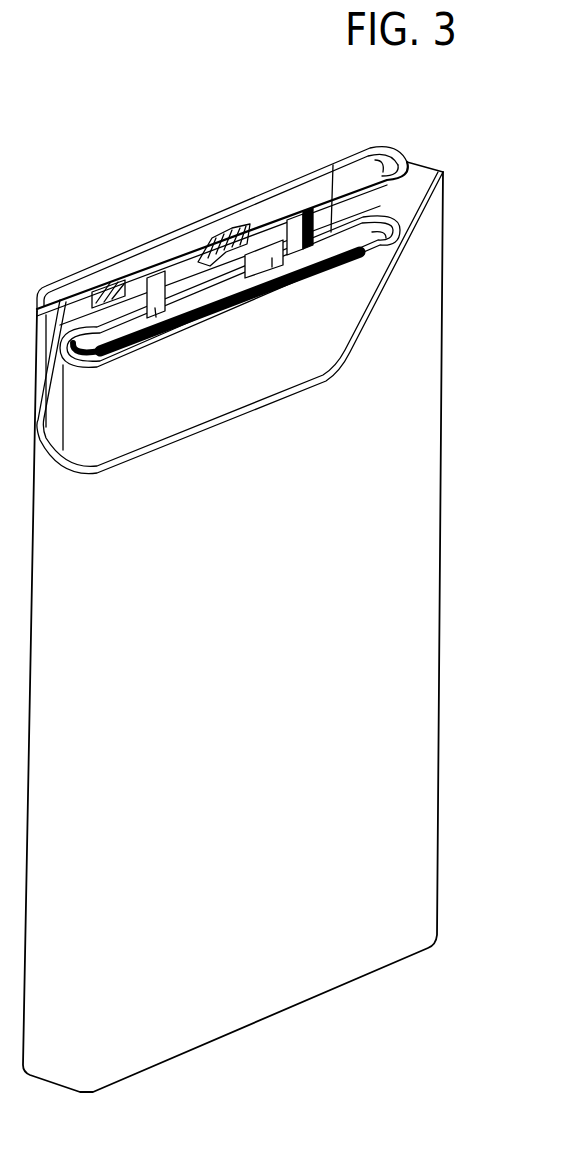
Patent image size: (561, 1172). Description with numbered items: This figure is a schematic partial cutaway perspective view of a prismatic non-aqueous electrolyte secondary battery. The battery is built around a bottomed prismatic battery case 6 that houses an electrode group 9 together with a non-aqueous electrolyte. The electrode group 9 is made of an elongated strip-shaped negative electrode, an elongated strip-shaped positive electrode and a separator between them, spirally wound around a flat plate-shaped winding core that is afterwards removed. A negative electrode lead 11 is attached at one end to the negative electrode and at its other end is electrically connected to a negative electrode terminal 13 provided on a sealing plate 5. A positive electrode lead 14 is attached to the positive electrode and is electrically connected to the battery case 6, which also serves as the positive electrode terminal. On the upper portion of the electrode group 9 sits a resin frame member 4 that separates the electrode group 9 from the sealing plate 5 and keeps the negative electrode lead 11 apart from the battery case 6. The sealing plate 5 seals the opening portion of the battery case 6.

The resin frame member 4 is at (333, 165).
The sealing plate 5 is at (287, 207).
The battery case 6 is at (402, 790).
The electrode group 9 is at (237, 396).
The negative electrode lead 11 is at (157, 342).
The negative electrode terminal 13 is at (182, 232).
The positive electrode lead 14 is at (281, 283).